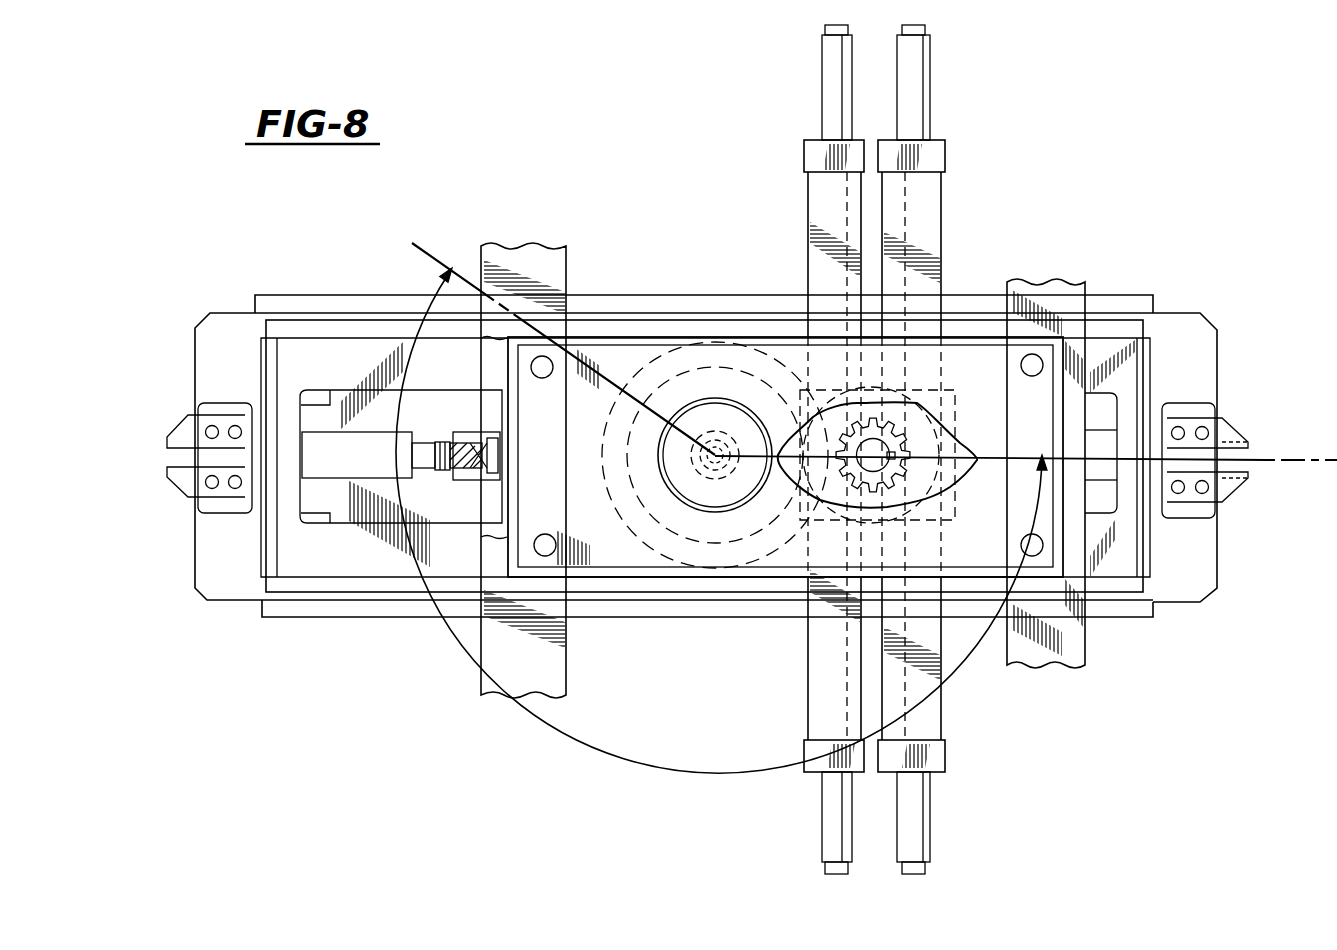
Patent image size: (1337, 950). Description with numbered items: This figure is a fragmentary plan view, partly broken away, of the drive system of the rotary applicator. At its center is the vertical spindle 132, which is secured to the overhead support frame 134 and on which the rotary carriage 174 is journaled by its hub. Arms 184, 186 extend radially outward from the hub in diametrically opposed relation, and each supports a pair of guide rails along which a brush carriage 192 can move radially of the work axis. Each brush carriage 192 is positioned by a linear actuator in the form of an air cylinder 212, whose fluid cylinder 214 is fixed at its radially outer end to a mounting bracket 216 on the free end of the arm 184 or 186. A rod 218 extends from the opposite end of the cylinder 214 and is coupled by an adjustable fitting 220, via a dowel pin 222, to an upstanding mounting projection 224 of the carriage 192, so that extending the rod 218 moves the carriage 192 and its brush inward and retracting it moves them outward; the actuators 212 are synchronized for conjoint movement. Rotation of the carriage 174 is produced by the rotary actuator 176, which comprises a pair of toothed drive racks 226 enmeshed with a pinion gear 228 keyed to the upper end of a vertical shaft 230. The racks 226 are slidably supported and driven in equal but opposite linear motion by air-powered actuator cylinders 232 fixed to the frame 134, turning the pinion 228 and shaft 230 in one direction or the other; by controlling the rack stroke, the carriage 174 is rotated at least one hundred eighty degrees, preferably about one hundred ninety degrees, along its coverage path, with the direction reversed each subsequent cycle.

The vertical spindle 132 is at (690, 390).
The overhead support frame 134 is at (540, 258).
The rotary carriage 174 is at (1212, 315).
The rotary actuator 176 is at (955, 222).
The arm 184 is at (222, 318).
The arm 186 is at (1210, 352).
The brush carriage 192 is at (382, 507).
The air cylinder 212 is at (353, 420).
The fluid cylinder 214 is at (322, 470).
The mounting bracket 216 is at (183, 430).
The rod 218 is at (423, 448).
The adjustable fitting 220 is at (468, 438).
The dowel pin 222 is at (492, 452).
The mounting projection 224 is at (476, 472).
The toothed drive rack 226 is at (822, 70).
The pinion gear 228 is at (885, 478).
The vertical shaft 230 is at (870, 465).
The actuator cylinder 232 is at (808, 197).